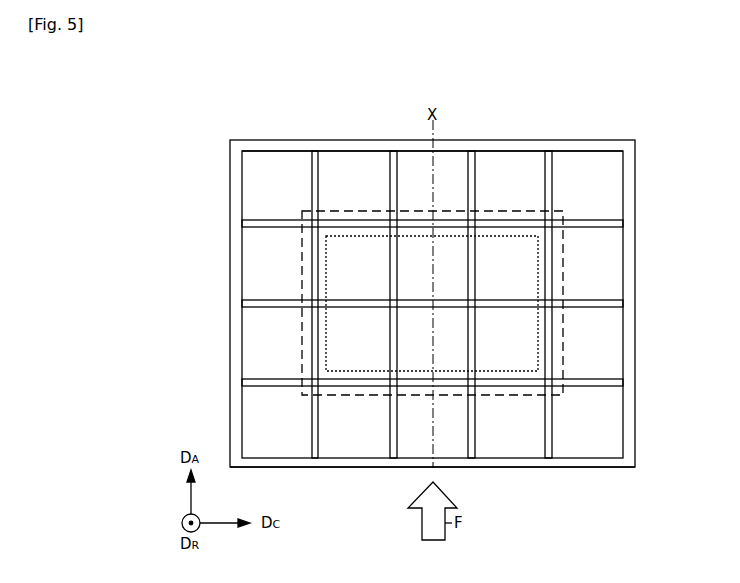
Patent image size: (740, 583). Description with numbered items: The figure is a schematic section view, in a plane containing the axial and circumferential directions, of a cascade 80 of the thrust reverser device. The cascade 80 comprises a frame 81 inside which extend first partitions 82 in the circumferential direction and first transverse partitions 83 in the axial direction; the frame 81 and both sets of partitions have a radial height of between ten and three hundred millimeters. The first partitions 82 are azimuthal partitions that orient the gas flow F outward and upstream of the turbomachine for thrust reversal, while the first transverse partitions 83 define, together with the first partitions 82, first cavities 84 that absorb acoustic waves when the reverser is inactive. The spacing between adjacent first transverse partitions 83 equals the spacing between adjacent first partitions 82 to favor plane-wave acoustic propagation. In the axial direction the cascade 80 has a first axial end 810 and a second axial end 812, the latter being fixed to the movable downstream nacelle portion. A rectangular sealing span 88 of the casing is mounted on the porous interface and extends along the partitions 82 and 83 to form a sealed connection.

The cascade 80 is at (627, 121).
The frame 81 is at (513, 138).
The second axial end 812 is at (573, 138).
The first axial end 810 is at (570, 468).
The first partitions 82 is at (587, 382).
The first transverse partitions 83 is at (548, 263).
The first cavities 84 is at (356, 185).
The sealing span 88 is at (500, 212).